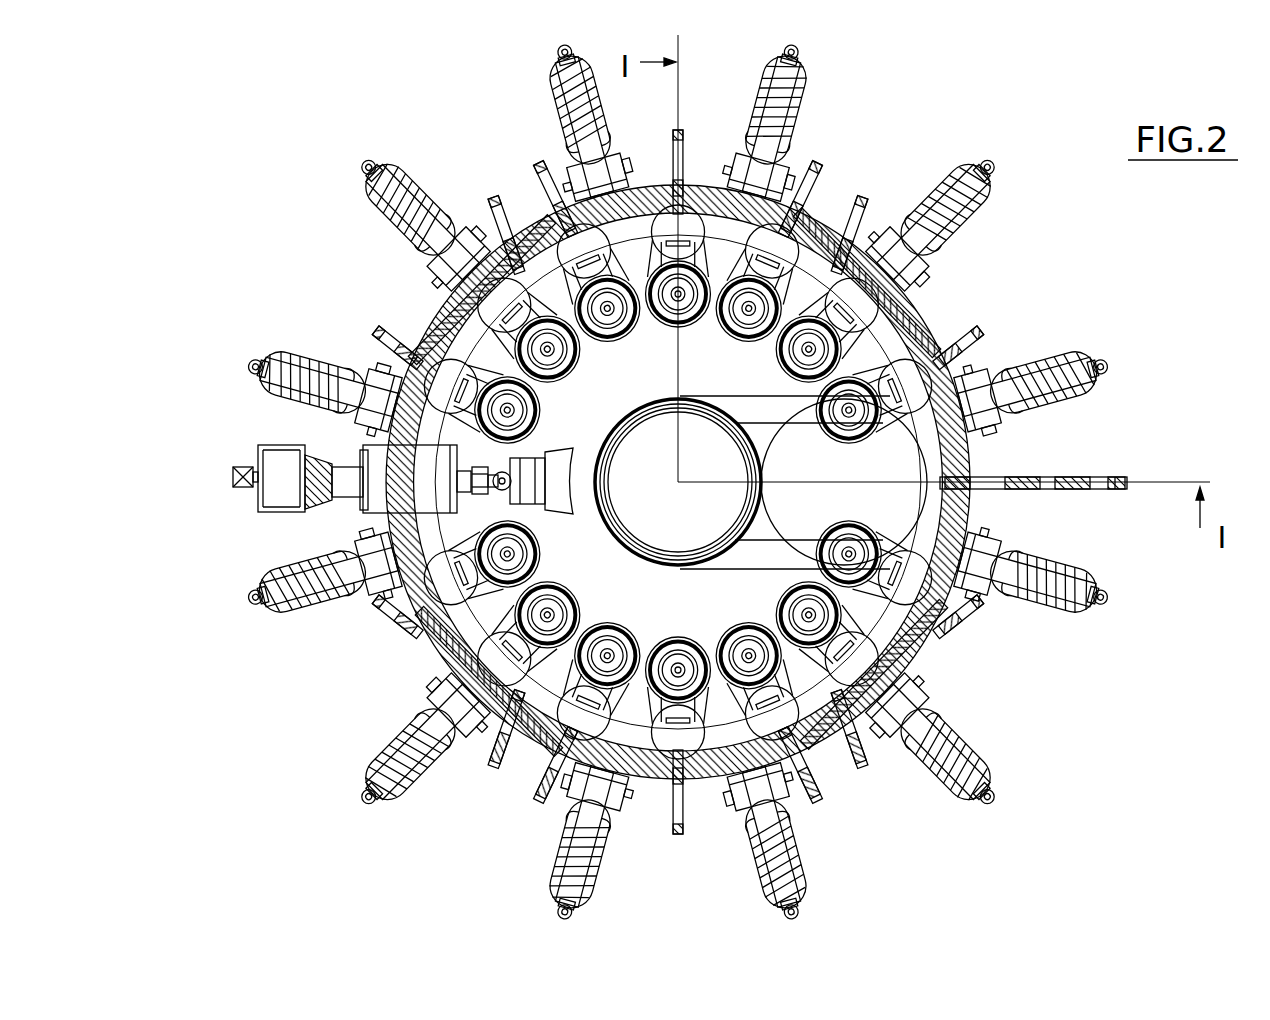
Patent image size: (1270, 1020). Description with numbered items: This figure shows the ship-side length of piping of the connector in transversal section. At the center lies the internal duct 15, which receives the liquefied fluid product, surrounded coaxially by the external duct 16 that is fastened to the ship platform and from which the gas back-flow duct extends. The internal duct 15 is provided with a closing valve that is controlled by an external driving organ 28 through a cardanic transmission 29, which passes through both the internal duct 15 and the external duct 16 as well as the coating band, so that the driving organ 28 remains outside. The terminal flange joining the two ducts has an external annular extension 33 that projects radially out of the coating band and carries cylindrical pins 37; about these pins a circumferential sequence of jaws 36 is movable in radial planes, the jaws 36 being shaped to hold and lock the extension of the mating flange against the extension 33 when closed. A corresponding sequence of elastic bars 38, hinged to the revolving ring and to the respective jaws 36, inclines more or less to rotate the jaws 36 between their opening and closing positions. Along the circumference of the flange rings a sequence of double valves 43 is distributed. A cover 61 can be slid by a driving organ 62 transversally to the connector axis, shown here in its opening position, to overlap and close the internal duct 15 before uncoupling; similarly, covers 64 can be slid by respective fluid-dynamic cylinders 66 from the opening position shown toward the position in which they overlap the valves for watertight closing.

The internal duct 15 is at (632, 403).
The external coaxial duct 16 is at (905, 600).
The external driving organ 28 is at (275, 495).
The cardanic transmission 29 is at (548, 445).
The external annular extension 33 is at (1033, 489).
The jaws 36 is at (288, 392).
The cylindrical pins 37 is at (380, 348).
The elastic bars 38 is at (322, 345).
The double valves 43 is at (722, 346).
The cover 61 is at (905, 333).
The driving organ 62 is at (1056, 491).
The covers 64 is at (684, 186).
The fluid-dynamic cylinders 66 is at (816, 170).